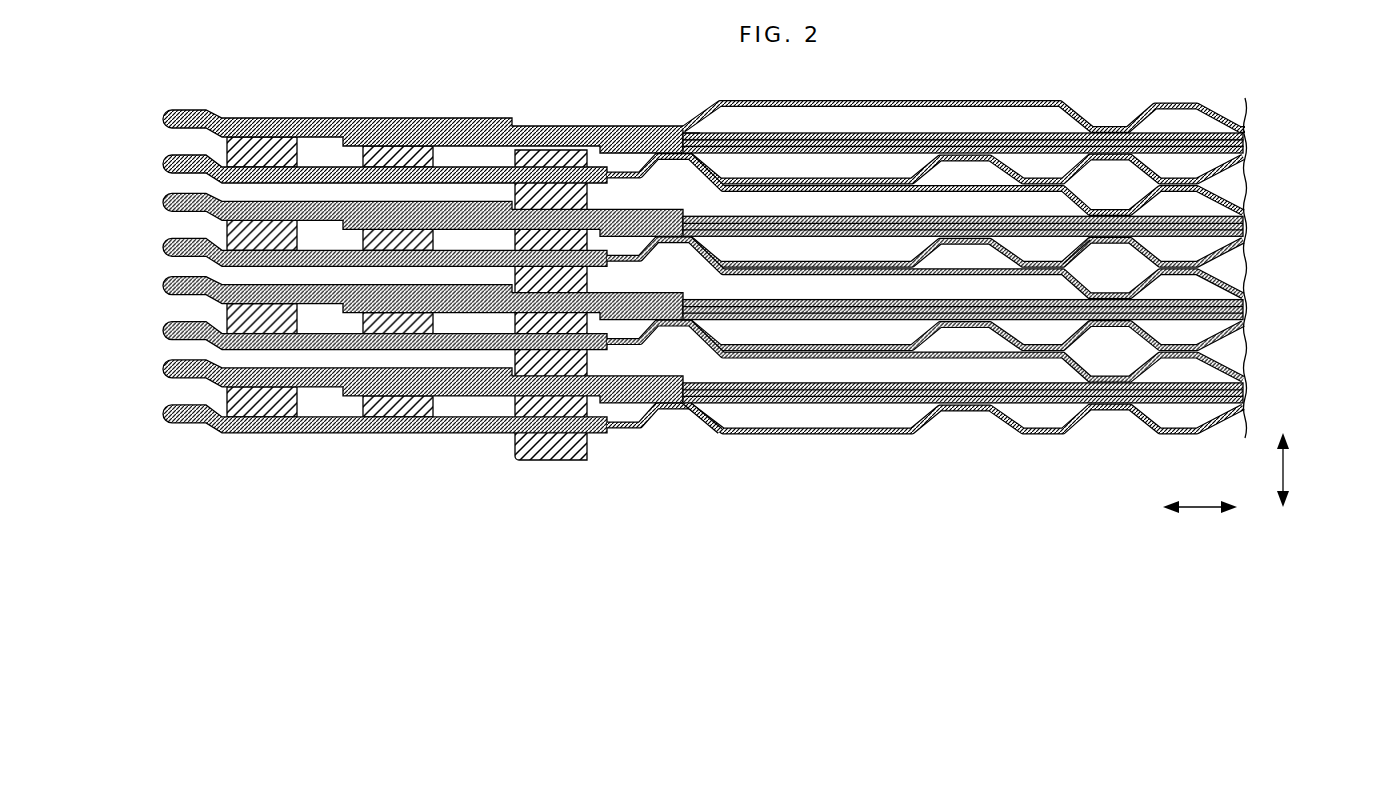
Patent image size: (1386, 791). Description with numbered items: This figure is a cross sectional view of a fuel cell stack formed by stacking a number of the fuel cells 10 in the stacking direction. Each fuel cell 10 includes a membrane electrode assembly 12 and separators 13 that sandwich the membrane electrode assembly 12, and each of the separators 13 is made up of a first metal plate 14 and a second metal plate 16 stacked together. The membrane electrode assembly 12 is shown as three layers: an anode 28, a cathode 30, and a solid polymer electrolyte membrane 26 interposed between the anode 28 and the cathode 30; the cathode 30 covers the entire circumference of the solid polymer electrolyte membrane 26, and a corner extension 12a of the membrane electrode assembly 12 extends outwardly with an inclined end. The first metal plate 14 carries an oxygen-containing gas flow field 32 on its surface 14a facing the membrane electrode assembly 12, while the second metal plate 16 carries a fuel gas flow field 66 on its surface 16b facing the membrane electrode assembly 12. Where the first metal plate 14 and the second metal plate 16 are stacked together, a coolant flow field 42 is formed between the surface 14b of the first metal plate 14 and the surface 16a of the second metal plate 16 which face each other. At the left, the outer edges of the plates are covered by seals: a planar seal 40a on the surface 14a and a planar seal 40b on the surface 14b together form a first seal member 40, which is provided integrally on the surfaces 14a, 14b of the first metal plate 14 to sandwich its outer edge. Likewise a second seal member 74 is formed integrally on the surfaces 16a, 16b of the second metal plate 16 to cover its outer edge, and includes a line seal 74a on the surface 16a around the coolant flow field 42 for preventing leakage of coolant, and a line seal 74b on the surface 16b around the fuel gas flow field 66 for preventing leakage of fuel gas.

The fuel cell 10 is at (988, 54).
The membrane electrode assembly 12 is at (1021, 167).
The extension 12a is at (683, 133).
The separator 13 is at (976, 305).
The first metal plate 14 is at (1236, 284).
The surface of the first metal plate 14a is at (670, 432).
The surface of the first metal plate 14b is at (672, 372).
The second metal plate 16 is at (986, 344).
The surface of the second metal plate 16a is at (622, 262).
The surface of the second metal plate 16b is at (648, 166).
The solid polymer electrolyte membrane 26 is at (1250, 141).
The anode 28 is at (998, 158).
The cathode 30 is at (1250, 133).
The oxygen-containing gas flow field 32 is at (1172, 115).
The first seal member 40 is at (373, 137).
The planar seal 40a is at (357, 153).
The planar seal 40b is at (174, 116).
The coolant flow field 42 is at (1108, 425).
The fuel gas flow field 66 is at (1177, 165).
The second seal member 74 is at (150, 416).
The line seal 74a is at (543, 448).
The line seal 74b is at (492, 418).